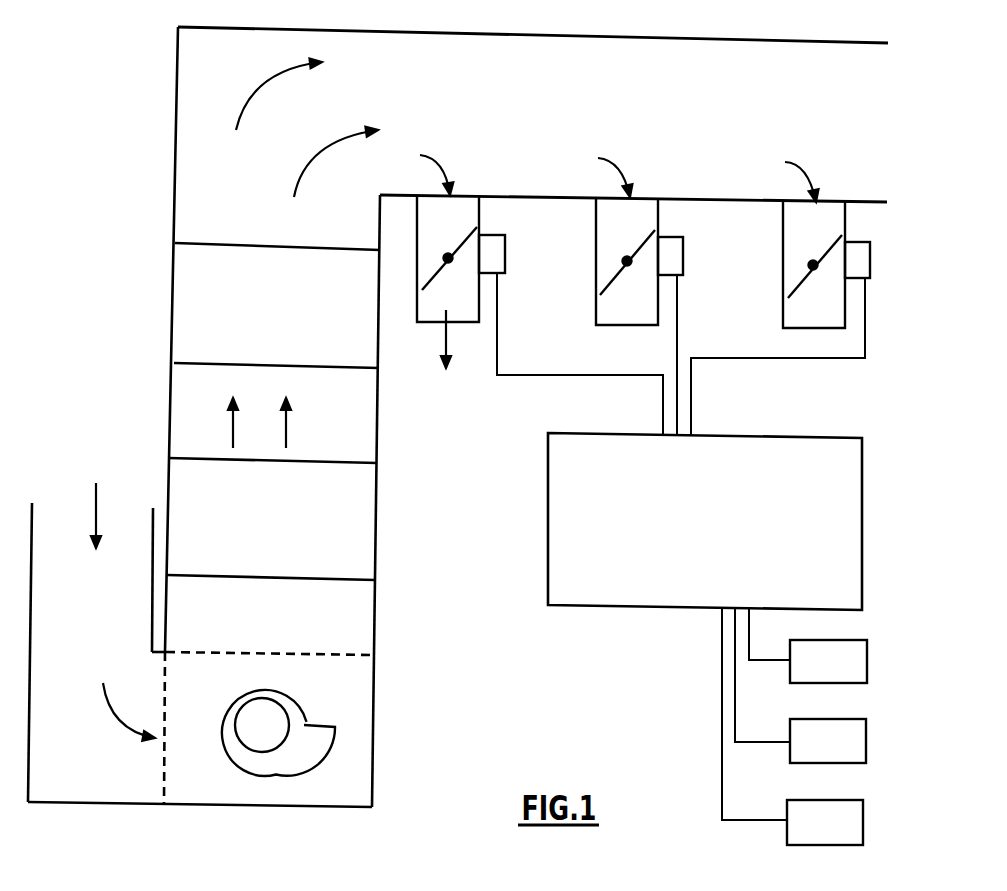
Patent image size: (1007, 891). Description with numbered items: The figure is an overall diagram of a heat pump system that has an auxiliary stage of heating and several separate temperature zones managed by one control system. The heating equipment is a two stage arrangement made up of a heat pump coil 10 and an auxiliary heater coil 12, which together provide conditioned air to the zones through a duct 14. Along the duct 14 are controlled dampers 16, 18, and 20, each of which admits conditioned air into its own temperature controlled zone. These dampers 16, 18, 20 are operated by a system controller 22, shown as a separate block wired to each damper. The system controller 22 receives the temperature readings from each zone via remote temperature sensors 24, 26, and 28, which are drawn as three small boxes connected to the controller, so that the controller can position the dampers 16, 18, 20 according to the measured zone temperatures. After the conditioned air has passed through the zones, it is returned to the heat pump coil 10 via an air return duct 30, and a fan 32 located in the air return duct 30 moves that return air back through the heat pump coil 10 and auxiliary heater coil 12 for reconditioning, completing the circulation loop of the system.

The heat pump coil 10 is at (377, 525).
The auxiliary heater coil 12 is at (172, 308).
The duct 14 is at (552, 42).
The damper 16 is at (480, 214).
The damper 18 is at (603, 312).
The damper 20 is at (788, 245).
The system controller 22 is at (805, 433).
The remote temperature sensor 24 is at (825, 639).
The remote temperature sensor 26 is at (823, 718).
The remote temperature sensor 28 is at (822, 800).
The air return duct 30 is at (60, 785).
The fan 32 is at (297, 763).